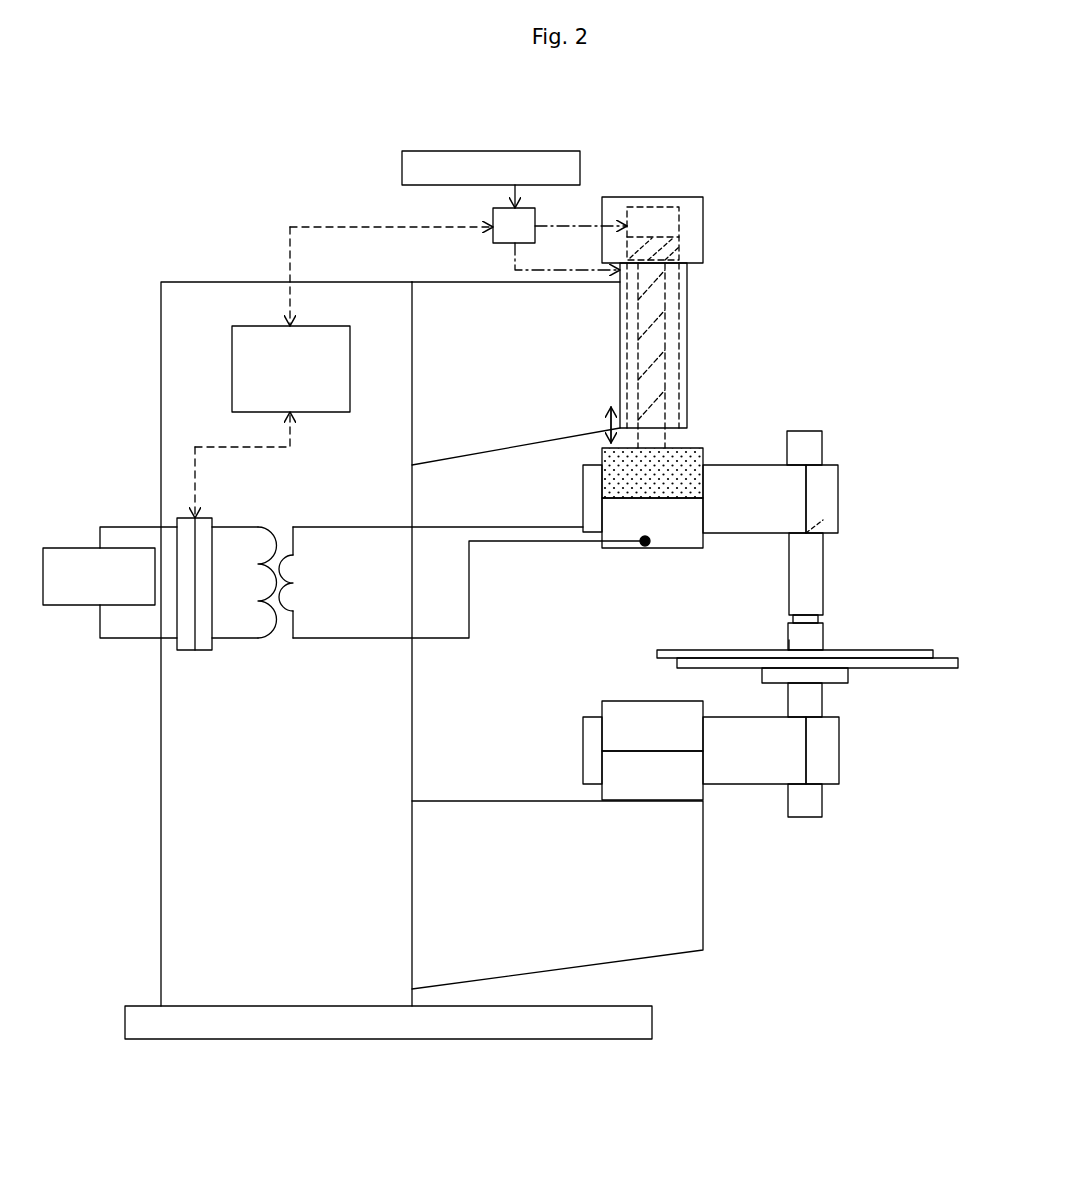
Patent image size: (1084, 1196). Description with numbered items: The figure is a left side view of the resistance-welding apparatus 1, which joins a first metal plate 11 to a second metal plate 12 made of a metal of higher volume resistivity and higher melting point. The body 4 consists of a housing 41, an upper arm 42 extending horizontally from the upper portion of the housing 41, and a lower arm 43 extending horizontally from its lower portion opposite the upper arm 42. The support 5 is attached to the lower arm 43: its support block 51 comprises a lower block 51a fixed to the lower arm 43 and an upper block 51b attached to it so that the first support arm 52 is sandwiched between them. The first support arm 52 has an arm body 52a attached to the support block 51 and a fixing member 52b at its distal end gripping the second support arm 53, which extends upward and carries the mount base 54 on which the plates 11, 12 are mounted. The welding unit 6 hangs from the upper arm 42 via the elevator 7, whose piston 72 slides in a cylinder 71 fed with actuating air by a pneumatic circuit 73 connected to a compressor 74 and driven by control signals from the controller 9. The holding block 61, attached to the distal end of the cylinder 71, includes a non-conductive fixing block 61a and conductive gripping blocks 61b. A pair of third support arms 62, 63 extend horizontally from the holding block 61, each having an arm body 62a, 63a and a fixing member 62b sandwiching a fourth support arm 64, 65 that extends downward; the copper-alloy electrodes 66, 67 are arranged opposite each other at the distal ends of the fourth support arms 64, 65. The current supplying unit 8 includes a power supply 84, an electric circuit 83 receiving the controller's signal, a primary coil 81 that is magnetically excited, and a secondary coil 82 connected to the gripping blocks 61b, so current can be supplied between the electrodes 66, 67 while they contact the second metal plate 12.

The resistance-welding apparatus 1 is at (705, 147).
The body 4 is at (244, 272).
The support 5 is at (578, 688).
The welding unit 6 is at (880, 443).
The elevator 7 is at (758, 290).
The current supplying unit 8 is at (140, 488).
The controller 9 is at (243, 378).
The first metal plate 11 is at (860, 668).
The second metal plate 12 is at (858, 652).
The housing 41 is at (200, 927).
The upper arm 42 is at (473, 290).
The lower arm 43 is at (660, 910).
The support block 51 is at (512, 712).
The lower block 51a is at (614, 780).
The upper block 51b is at (612, 722).
The first support arm 52 is at (760, 852).
The arm body 52a is at (762, 764).
The fixing member 52b is at (830, 764).
The second support arm 53 is at (823, 700).
The mount base 54 is at (775, 676).
The holding block 61 is at (598, 492).
The fixing block 61a is at (698, 470).
The gripping block 61b is at (667, 548).
The third support arm 62 is at (762, 393).
The arm body 62a is at (765, 480).
The fixing member 62b is at (830, 475).
The third support arm 63 is at (698, 592).
The arm body 63a is at (736, 533).
The fourth support arm 64 is at (822, 562).
The fourth support arm 65 is at (822, 592).
The electrode 66 is at (790, 643).
The electrode 67 is at (823, 640).
The cylinder 71 is at (703, 233).
The piston 72 is at (652, 323).
The pneumatic circuit 73 is at (535, 210).
The compressor 74 is at (580, 172).
The primary coil 81 is at (212, 527).
The secondary coil 82 is at (292, 527).
The electric circuit 83 is at (198, 643).
The power supply 84 is at (82, 608).